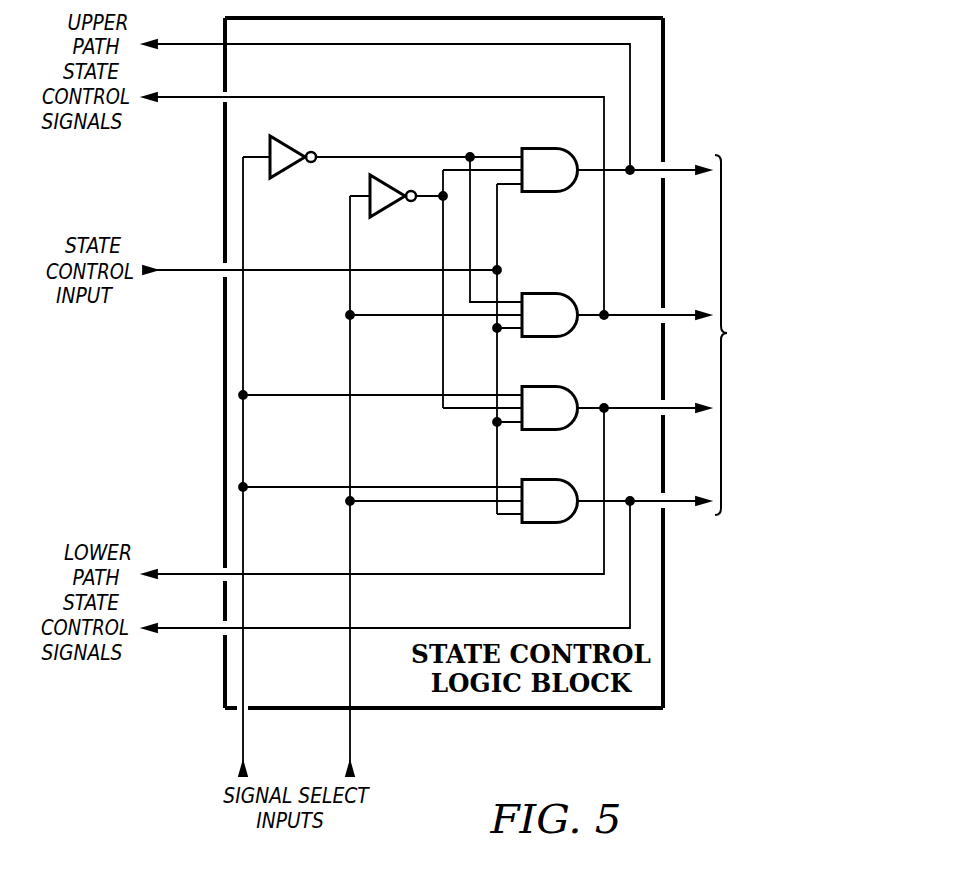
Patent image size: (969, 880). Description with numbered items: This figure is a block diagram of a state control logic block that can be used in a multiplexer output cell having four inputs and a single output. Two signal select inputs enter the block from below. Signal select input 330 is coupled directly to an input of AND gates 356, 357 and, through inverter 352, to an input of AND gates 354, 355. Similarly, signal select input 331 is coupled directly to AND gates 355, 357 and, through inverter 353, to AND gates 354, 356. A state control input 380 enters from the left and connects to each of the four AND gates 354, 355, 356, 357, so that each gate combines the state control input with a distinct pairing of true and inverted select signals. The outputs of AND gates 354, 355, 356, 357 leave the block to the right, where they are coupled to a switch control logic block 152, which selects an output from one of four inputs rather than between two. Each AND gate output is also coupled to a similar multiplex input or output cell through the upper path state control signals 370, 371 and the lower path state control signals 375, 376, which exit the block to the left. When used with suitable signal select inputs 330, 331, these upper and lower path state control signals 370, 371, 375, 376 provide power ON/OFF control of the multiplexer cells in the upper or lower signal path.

The switch control logic block 152 is at (769, 335).
The signal select input 330 is at (245, 736).
The signal select input 331 is at (352, 736).
The inverter 352 is at (292, 170).
The inverter 353 is at (391, 208).
The AND gate 354 is at (536, 193).
The AND gate 355 is at (536, 338).
The AND gate 356 is at (536, 431).
The AND gate 357 is at (536, 524).
The upper path state control signal 370 is at (184, 42).
The upper path state control signal 371 is at (184, 95).
The lower path state control signal 375 is at (184, 571).
The lower path state control signal 376 is at (184, 625).
The state control input 380 is at (184, 266).